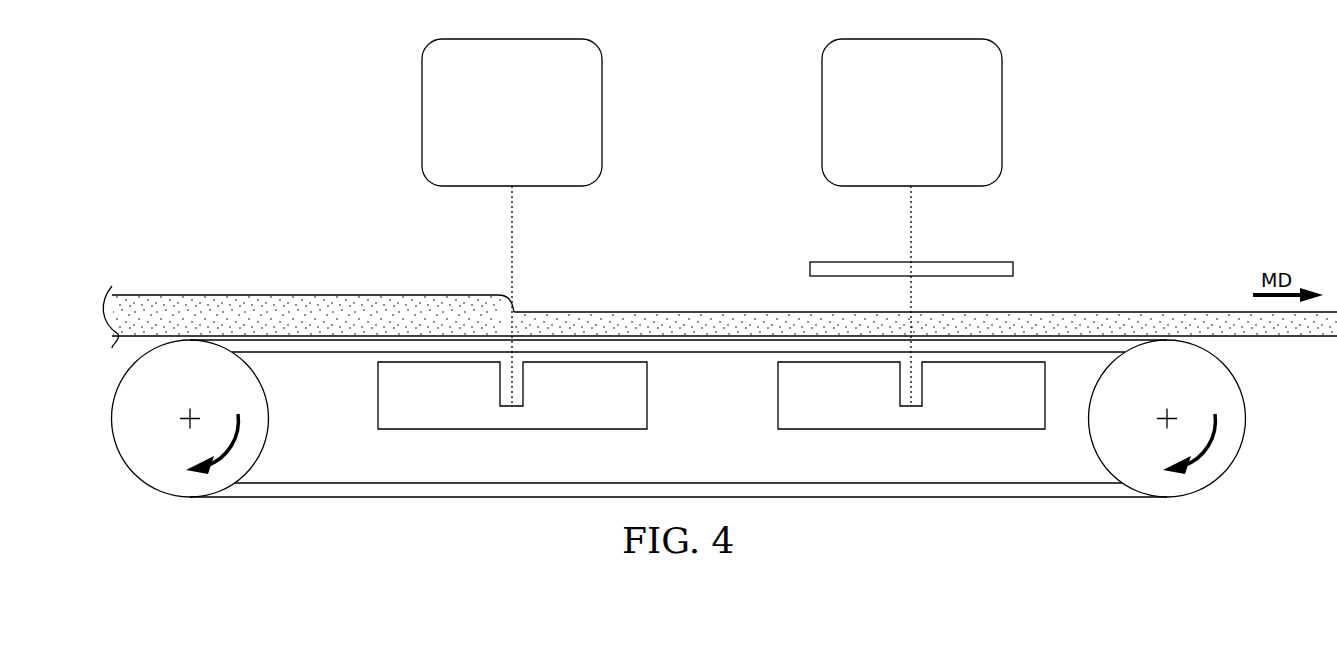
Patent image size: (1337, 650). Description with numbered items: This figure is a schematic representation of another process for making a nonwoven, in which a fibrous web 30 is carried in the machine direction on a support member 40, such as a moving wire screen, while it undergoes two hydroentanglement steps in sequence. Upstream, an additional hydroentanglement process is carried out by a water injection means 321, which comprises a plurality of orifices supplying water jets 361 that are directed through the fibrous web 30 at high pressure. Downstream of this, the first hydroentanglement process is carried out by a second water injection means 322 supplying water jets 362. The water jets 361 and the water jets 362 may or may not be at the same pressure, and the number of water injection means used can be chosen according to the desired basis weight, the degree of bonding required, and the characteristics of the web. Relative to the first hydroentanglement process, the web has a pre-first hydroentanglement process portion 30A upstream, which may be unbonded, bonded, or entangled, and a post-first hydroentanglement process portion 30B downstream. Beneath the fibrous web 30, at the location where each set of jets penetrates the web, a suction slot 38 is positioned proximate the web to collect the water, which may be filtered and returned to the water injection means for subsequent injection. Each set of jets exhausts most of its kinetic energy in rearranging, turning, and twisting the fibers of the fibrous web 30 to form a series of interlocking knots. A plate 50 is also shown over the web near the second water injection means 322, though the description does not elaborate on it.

The fibrous web 30 is at (180, 266).
The pre-first hydroentanglement process portion 30A is at (713, 310).
The post-first hydroentanglement process portion 30B is at (1142, 309).
The water injection means 321 is at (535, 125).
The water injection means 322 is at (935, 125).
The water jets 361 is at (510, 271).
The water jets 362 is at (908, 231).
The suction slot 38 is at (498, 385).
The support member 40 is at (335, 353).
The plate 50 is at (955, 260).